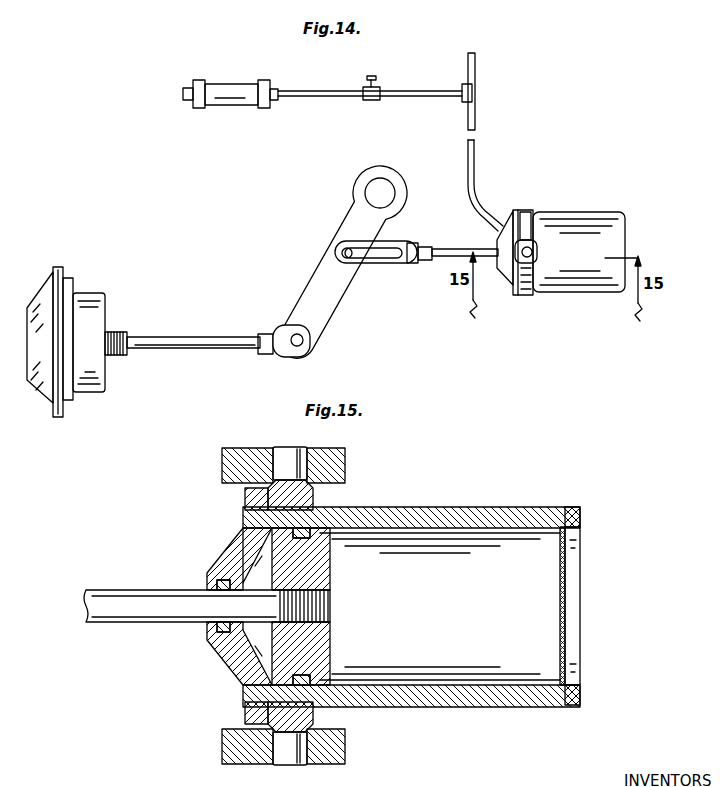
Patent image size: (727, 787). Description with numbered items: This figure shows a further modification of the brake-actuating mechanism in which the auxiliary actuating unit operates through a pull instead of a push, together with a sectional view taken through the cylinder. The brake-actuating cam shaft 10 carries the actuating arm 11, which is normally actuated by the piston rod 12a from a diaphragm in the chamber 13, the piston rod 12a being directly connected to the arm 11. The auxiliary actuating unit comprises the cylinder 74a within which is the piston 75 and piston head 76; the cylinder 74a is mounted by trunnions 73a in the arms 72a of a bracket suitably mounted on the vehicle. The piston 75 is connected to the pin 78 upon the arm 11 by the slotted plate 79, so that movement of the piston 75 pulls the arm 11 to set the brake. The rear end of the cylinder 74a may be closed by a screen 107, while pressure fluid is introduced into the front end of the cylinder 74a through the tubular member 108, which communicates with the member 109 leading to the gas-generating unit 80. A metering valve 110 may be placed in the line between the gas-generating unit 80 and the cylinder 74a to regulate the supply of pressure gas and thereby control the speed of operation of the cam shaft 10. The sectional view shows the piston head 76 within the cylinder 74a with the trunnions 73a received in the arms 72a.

In FIG. 14, the brake-actuating cam shaft 10 is at (381, 190).
In FIG. 14, the actuating arm 11 is at (333, 299).
In FIG. 14, the piston rod 12a is at (195, 339).
In FIG. 14, the chamber 13 is at (74, 294).
In FIG. 14, the arms 72a is at (523, 237).
In FIG. 15, the arms 72a is at (333, 467).
In FIG. 14, the trunnions 73a is at (537, 252).
In FIG. 15, the trunnions 73a is at (287, 456).
In FIG. 14, the cylinder 74a is at (586, 230).
In FIG. 15, the cylinder 74a is at (449, 523).
In FIG. 14, the piston 75 is at (452, 252).
In FIG. 15, the piston 75 is at (132, 605).
In FIG. 15, the piston head 76 is at (318, 569).
In FIG. 14, the pin 78 is at (345, 254).
In FIG. 14, the slotted plate 79 is at (406, 245).
In FIG. 14, the gas-generating unit 80 is at (226, 94).
In FIG. 15, the screen 107 is at (566, 587).
In FIG. 14, the tubular member 108 is at (473, 160).
In FIG. 14, the member 109 is at (410, 92).
In FIG. 14, the metering valve 110 is at (364, 89).